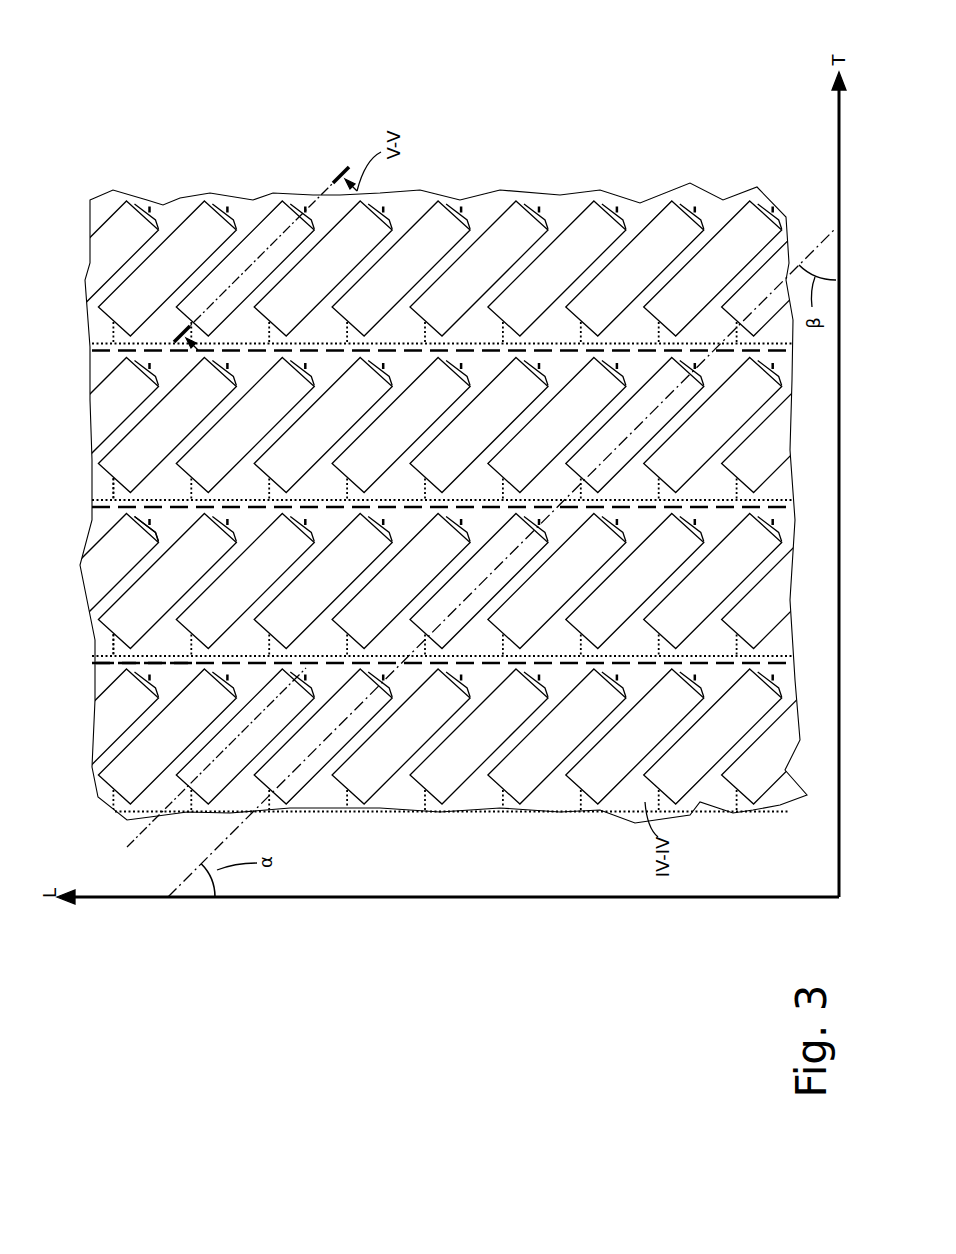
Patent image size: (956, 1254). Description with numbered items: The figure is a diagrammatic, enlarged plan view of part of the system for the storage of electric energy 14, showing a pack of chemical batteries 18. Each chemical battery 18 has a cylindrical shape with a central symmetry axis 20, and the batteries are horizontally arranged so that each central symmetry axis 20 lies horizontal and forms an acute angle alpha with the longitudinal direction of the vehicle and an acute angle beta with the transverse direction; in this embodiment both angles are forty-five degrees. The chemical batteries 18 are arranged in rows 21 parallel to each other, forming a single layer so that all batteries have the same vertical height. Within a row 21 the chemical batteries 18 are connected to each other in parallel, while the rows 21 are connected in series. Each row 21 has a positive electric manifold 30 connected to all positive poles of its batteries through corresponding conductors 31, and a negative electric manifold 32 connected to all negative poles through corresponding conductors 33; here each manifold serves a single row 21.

The system for the storage of electric energy 14 is at (308, 100).
The chemical battery 18 is at (191, 238).
The central symmetry axis 20 is at (209, 771).
The row 21 is at (60, 269).
The positive electric manifold 30 is at (114, 665).
The conductor 31 is at (128, 519).
The negative electric manifold 32 is at (113, 654).
The conductor 33 is at (113, 491).